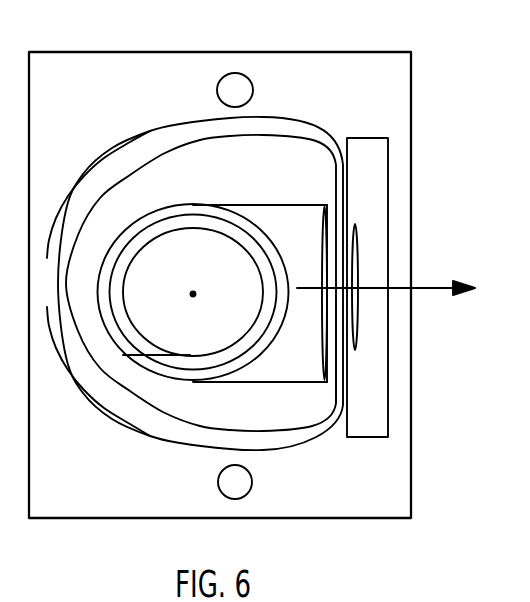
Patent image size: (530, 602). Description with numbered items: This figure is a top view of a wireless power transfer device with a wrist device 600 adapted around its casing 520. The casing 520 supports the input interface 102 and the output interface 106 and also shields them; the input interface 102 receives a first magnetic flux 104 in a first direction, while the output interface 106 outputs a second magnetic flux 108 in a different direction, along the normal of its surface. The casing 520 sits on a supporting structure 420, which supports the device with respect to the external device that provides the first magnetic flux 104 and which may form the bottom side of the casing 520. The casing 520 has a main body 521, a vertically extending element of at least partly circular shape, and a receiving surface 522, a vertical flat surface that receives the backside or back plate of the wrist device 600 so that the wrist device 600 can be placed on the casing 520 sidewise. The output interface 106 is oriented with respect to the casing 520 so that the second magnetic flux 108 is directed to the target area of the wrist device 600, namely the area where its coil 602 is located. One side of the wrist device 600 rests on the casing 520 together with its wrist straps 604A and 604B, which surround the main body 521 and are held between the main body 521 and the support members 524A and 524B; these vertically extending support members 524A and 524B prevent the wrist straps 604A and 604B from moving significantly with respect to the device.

The supporting structure 420 is at (323, 48).
The support member 524A is at (254, 88).
The support member 524B is at (218, 483).
The wrist device 600 is at (355, 137).
The coil 602 is at (357, 224).
The wrist strap 604A is at (117, 148).
The wrist strap 604B is at (100, 406).
The main body 521 is at (152, 153).
The casing 520 is at (253, 191).
The output interface 106 is at (322, 217).
The input interface 102 is at (101, 319).
The first magnetic flux 104 is at (193, 294).
The second magnetic flux 108 is at (436, 283).
The receiving surface 522 is at (336, 392).